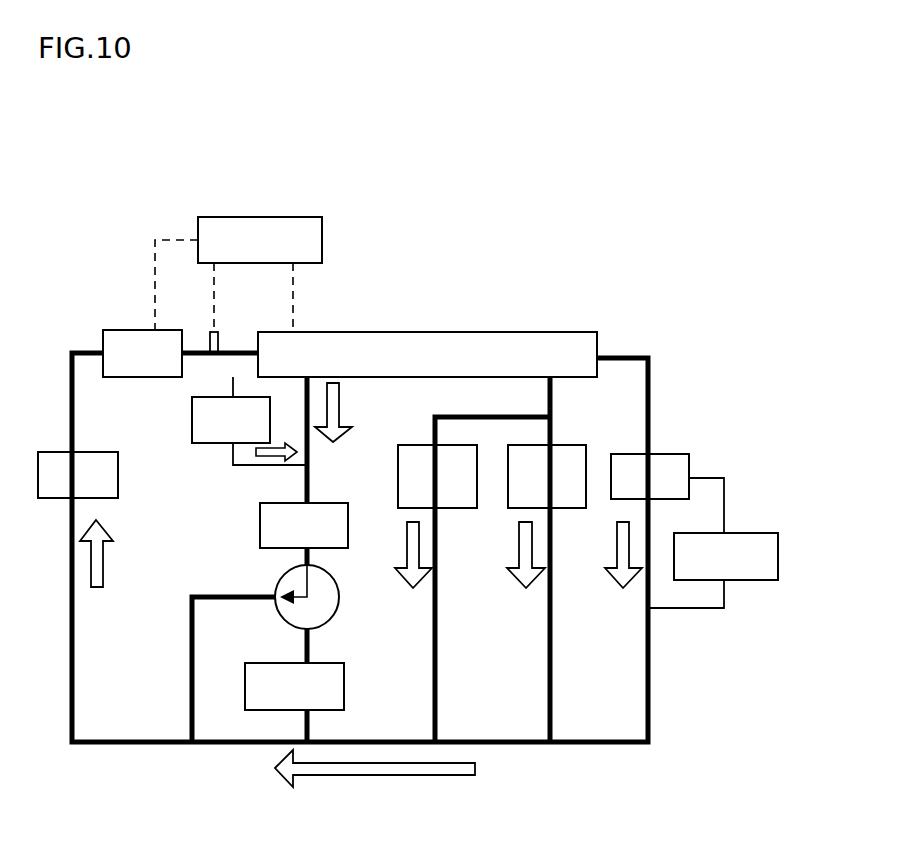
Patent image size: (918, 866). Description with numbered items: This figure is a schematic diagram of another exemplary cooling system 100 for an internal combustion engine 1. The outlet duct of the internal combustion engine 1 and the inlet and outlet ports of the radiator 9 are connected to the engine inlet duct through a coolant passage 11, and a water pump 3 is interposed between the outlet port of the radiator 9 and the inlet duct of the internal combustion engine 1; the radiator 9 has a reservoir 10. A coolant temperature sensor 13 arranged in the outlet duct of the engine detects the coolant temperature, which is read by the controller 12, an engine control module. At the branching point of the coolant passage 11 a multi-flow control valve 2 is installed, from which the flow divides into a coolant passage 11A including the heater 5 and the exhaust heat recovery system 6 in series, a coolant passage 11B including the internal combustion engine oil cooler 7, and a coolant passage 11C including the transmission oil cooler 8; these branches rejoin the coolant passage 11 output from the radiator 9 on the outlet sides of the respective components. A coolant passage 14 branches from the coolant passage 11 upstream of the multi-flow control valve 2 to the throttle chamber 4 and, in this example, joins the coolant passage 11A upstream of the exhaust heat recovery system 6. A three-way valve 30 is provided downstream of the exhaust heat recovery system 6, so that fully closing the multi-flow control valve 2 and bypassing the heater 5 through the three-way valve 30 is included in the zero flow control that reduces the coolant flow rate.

The internal combustion engine 1 is at (128, 336).
The multi-flow control valve 2 is at (560, 335).
The water pump 3 is at (55, 453).
The throttle chamber 4 is at (210, 443).
The heater 5 is at (345, 676).
The exhaust heat recovery system 6 is at (338, 546).
The internal combustion engine oil cooler 7 is at (455, 508).
The transmission oil cooler 8 is at (565, 508).
The radiator 9 is at (682, 456).
The reservoir 10 is at (752, 535).
The coolant passage 11 is at (125, 742).
The coolant passage 11A is at (311, 482).
The coolant passage 11B is at (437, 650).
The coolant passage 11C is at (548, 650).
The controller 12 is at (320, 240).
The coolant temperature sensor 13 is at (217, 338).
The coolant passage 14 is at (253, 466).
The three-way valve 30 is at (332, 617).
The cooling system 100 is at (505, 245).